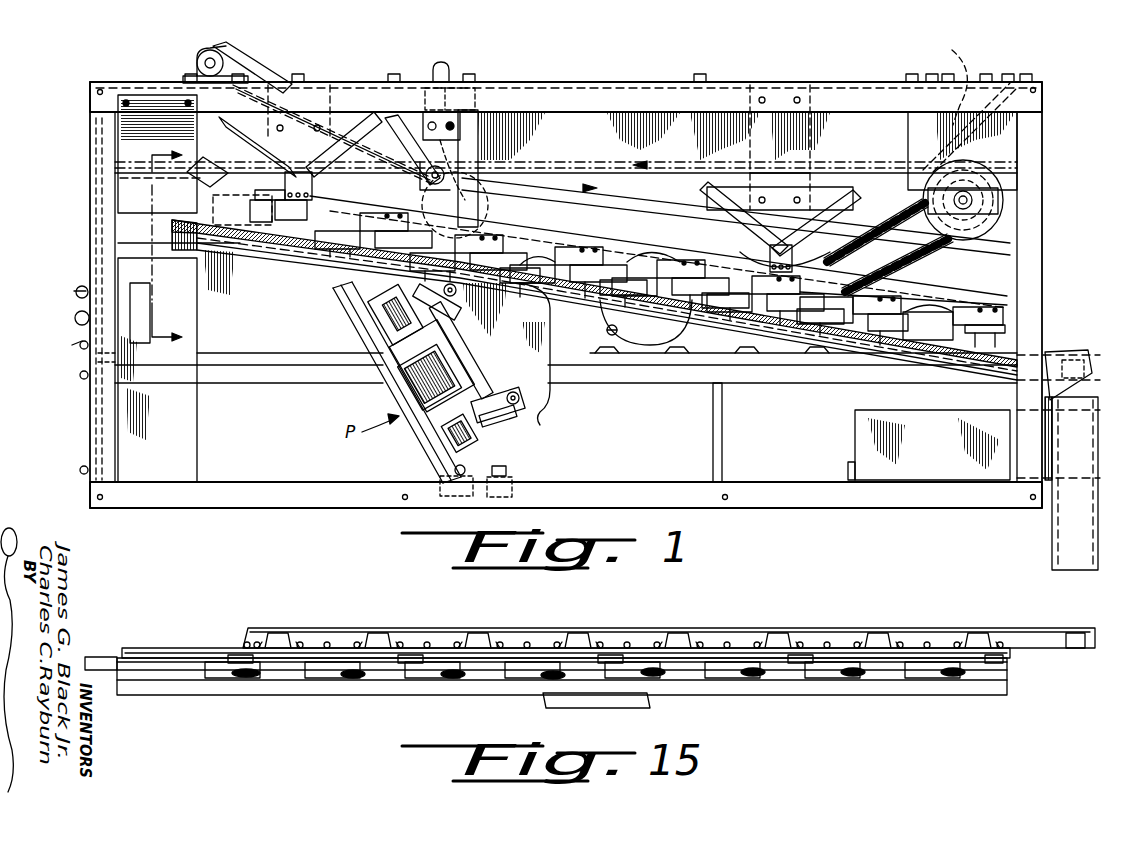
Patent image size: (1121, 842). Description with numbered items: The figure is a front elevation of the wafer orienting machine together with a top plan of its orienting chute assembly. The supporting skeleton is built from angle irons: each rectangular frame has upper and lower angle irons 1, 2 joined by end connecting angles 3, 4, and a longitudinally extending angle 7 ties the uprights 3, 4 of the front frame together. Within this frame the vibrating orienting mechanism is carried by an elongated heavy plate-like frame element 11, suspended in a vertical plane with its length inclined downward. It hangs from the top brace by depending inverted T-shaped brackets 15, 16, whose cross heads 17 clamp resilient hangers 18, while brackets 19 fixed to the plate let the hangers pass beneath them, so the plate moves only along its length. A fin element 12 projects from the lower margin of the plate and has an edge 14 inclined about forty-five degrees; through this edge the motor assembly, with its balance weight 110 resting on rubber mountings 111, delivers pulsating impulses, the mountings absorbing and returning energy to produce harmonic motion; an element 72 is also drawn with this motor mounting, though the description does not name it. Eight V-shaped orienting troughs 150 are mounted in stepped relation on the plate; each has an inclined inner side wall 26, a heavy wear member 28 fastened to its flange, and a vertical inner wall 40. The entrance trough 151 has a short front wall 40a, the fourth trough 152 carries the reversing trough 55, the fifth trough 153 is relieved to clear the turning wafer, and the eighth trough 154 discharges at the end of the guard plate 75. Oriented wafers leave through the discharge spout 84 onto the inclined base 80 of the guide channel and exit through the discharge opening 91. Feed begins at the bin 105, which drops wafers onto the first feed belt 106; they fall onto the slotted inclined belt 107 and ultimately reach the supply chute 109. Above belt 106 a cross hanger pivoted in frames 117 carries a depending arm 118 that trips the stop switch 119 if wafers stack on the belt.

In FIG. 1, the upper angle iron 1 is at (597, 97).
In FIG. 1, the lower angle iron 2 is at (647, 488).
In FIG. 1, the end connecting angle 3 is at (90, 415).
In FIG. 1, the end connecting angle 4 is at (1030, 253).
In FIG. 1, the longitudinally extending angle 7 is at (262, 377).
In FIG. 1, the plate-like frame element 11 is at (546, 230).
In FIG. 15, the plate-like frame element 11 is at (188, 632).
In FIG. 1, the fin element 12 is at (544, 358).
In FIG. 1, the inclined edge of fin 14 is at (476, 362).
In FIG. 1, the inverted T-shaped bracket 15 is at (340, 110).
In FIG. 1, the inverted T-shaped bracket 16 is at (785, 146).
In FIG. 1, the cross head 17 is at (281, 175).
In FIG. 1, the resilient hanger 18 is at (338, 162).
In FIG. 1, the bracket 19 is at (316, 190).
In FIG. 15, the inner side wall 26 is at (305, 670).
In FIG. 1, the wear member 28 is at (340, 206).
In FIG. 15, the wear member 28 is at (213, 680).
In FIG. 15, the inner wall 40 is at (352, 680).
In FIG. 15, the front wall 40a is at (158, 680).
In FIG. 15, the reversing trough 55 is at (625, 696).
In FIG. 1, the lever 72 is at (420, 393).
In FIG. 1, the guard plate 75 is at (957, 356).
In FIG. 15, the guard plate 75 is at (1010, 686).
In FIG. 1, the inclined base 80 is at (850, 350).
In FIG. 15, the inclined base 80 is at (1017, 630).
In FIG. 15, the discharge spout 84 is at (377, 636).
In FIG. 1, the discharge opening 91 is at (1085, 376).
In FIG. 15, the discharge opening 91 is at (1078, 652).
In FIG. 1, the bin 105 is at (862, 118).
In FIG. 1, the first feed belt 106 is at (626, 160).
In FIG. 1, the inclined belt 107 is at (422, 184).
In FIG. 1, the supply chute 109 is at (180, 150).
In FIG. 1, the balance weight 110 is at (383, 327).
In FIG. 1, the rubber mounting 111 is at (380, 310).
In FIG. 1, the frame 117 is at (446, 62).
In FIG. 1, the depending arm 118 is at (448, 78).
In FIG. 1, the stop switch 119 is at (385, 120).
In FIG. 1, the orienting trough 150 is at (830, 290).
In FIG. 1, the first orienting trough 151 is at (263, 198).
In FIG. 1, the fourth orienting trough 152 is at (553, 248).
In FIG. 1, the fifth orienting trough 153 is at (658, 255).
In FIG. 1, the eighth orienting trough 154 is at (945, 300).